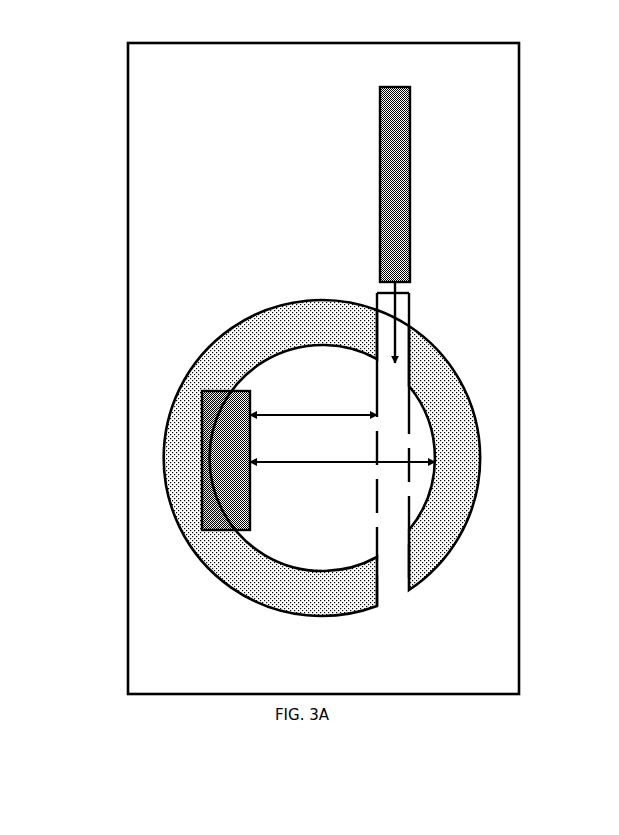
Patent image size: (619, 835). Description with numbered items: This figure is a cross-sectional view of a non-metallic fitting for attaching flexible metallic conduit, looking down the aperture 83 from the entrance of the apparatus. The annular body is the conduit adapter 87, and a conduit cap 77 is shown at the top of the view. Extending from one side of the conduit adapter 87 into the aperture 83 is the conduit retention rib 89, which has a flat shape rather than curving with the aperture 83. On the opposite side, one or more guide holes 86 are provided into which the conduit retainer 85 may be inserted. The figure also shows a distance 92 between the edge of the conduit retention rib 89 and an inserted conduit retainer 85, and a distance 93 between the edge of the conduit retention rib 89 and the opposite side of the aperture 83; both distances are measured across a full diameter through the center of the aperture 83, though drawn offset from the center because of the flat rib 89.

The conduit cap 77 is at (410, 328).
The aperture 83 is at (310, 543).
The conduit retainer 85 is at (403, 181).
The guide holes 86 is at (388, 572).
The conduit adapter 87 is at (238, 345).
The conduit retention rib 89 is at (228, 427).
The distance 92 is at (313, 405).
The distance 93 is at (342, 472).